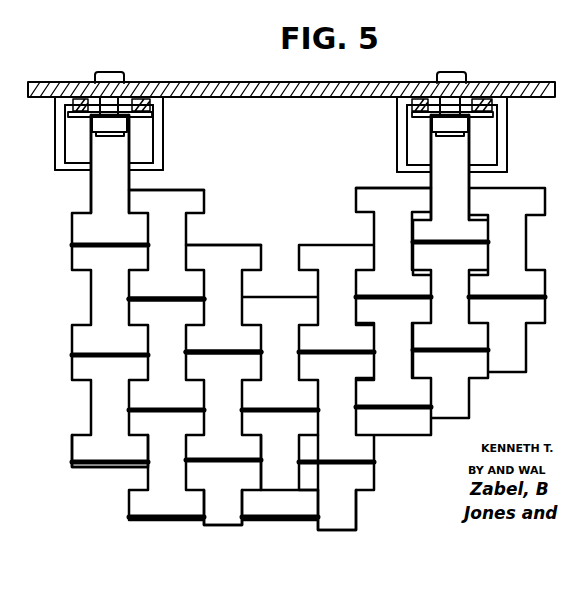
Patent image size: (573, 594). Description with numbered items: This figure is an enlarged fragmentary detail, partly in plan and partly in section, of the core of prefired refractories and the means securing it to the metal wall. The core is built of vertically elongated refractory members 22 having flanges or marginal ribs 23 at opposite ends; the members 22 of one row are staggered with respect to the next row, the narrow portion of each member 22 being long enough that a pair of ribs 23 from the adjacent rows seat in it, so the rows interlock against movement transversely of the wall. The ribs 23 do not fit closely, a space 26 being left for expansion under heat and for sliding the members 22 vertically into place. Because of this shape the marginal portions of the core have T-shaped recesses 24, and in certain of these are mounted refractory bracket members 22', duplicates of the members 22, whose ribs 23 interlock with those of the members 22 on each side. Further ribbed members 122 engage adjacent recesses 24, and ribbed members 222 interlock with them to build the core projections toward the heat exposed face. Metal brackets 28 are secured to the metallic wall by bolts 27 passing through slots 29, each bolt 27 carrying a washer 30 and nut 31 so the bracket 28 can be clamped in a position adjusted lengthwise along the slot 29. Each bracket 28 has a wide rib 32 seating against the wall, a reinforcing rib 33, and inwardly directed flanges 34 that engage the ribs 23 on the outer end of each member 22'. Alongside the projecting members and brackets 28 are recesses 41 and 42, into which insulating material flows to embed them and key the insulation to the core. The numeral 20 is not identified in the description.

The support rail 20 is at (332, 82).
The refractory members 22 is at (300, 322).
The ribbed refractory members 122 is at (157, 468).
The ribbed refractory members 222 is at (343, 512).
The refractory bracket members 22' is at (278, 167).
The flanges or marginal ribs 23 is at (199, 203).
The T-shaped recesses 24 is at (277, 256).
The space 26 is at (165, 302).
The bolts 27 is at (120, 75).
The metal brackets 28 is at (134, 126).
The slot 29 is at (142, 97).
The washer 30 is at (137, 133).
The nut 31 is at (112, 136).
The wide rib 32 is at (158, 153).
The reinforcing rib 33 is at (58, 140).
The inwardly directed flanges 34 is at (72, 173).
The recesses 41 is at (128, 181).
The recesses 42 is at (188, 226).